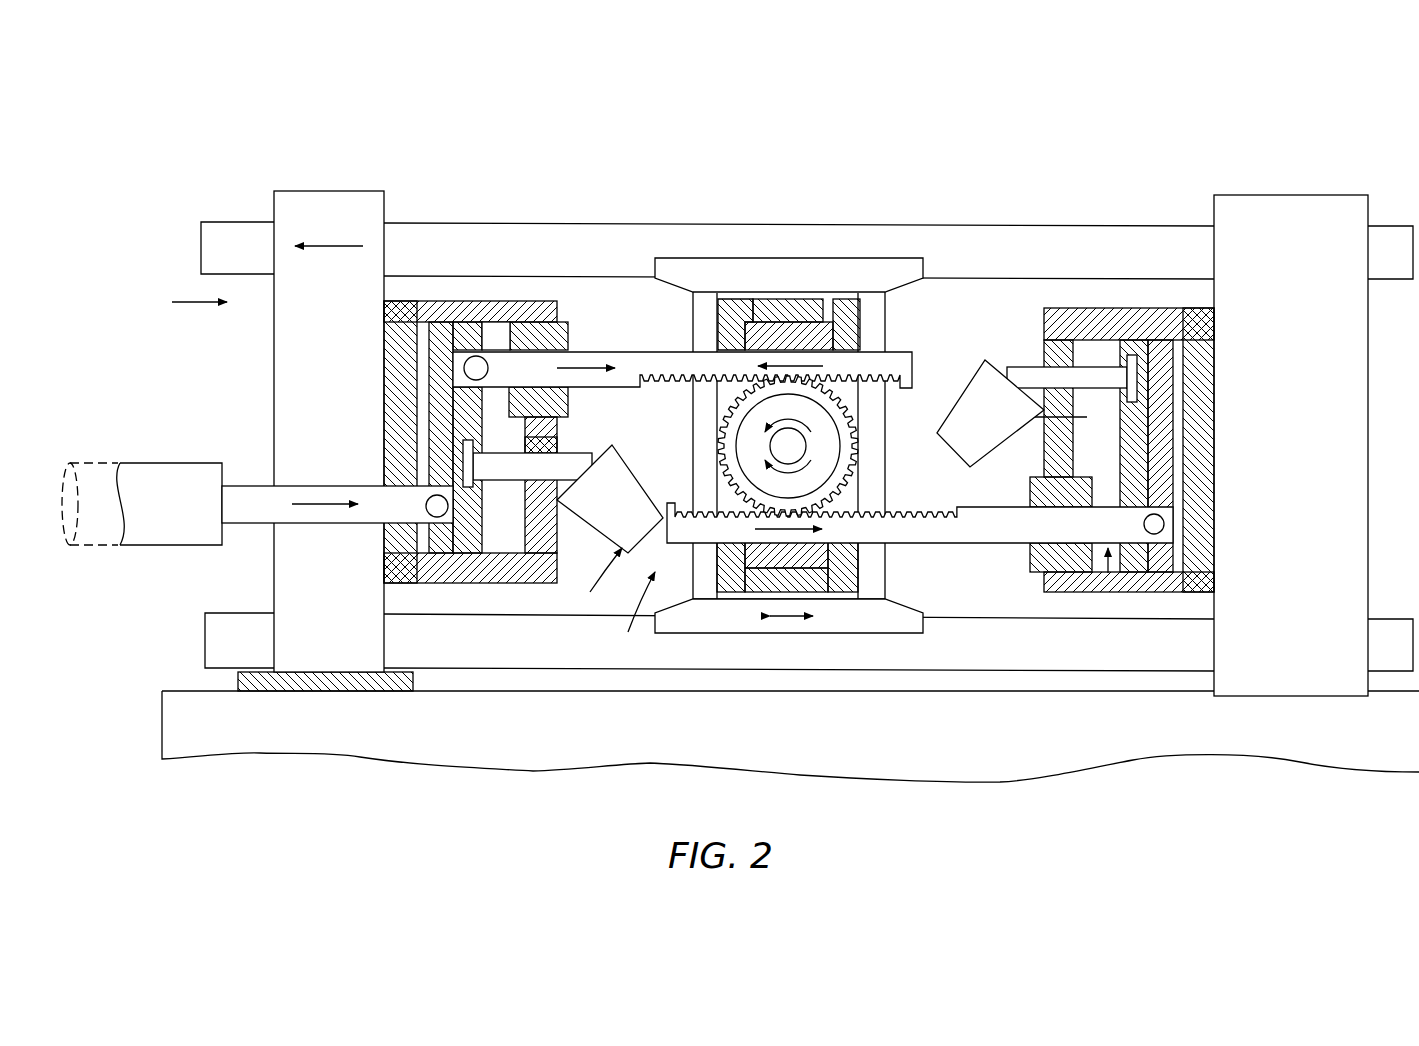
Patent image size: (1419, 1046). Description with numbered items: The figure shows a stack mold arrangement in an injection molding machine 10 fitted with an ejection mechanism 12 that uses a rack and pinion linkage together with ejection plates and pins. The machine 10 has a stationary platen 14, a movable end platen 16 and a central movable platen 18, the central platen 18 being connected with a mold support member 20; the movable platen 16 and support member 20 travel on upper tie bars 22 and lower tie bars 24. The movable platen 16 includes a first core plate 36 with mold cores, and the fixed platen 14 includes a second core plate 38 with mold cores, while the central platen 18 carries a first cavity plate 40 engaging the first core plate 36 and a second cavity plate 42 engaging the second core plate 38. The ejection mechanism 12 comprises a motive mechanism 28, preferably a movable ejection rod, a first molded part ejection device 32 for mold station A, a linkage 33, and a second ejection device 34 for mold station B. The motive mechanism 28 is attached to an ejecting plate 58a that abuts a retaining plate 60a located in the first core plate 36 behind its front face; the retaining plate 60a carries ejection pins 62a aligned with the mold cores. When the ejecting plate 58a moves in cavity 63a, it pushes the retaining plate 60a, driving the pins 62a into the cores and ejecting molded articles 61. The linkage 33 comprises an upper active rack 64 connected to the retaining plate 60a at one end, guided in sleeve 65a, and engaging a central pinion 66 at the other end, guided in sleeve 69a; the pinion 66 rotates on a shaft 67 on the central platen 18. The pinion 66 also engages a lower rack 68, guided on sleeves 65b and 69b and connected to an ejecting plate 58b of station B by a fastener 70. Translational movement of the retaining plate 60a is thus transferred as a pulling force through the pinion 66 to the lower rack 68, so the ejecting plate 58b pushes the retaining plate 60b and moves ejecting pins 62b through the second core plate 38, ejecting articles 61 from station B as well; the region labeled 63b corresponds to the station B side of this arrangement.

The injection molding machine 10 is at (755, 137).
The ejection mechanism 12 is at (588, 580).
The stationary platen 14 is at (1268, 208).
The movable platen 16 is at (305, 200).
The central movable platen 18 is at (768, 304).
The mold support member 20 is at (872, 577).
The upper tie bars 22 is at (228, 232).
The lower tie bars 24 is at (220, 640).
The motive mechanism 28 is at (173, 462).
The first molded part ejection device 32 is at (490, 303).
The linkage 33 is at (630, 613).
The second ejection device 34 is at (1106, 592).
The first core plate 36 is at (545, 330).
The second core plate 38 is at (1047, 316).
The first cavity plate 40 is at (730, 326).
The second cavity plate 42 is at (845, 311).
The ejecting plate 58a is at (438, 547).
The ejecting plate 58b is at (1155, 345).
The retaining plate 60a is at (475, 550).
The retaining plate 60b is at (1130, 342).
The molded articles 61 is at (615, 458).
The ejection pins 62a is at (500, 460).
The ejecting pins 62b is at (1020, 375).
The cavity 63a is at (497, 333).
The second chamber 63b is at (1080, 450).
The upper active rack 64 is at (673, 378).
The sleeve 65a is at (540, 388).
The sleeve 65b is at (1032, 562).
The central pinion 66 is at (832, 394).
The shaft 67 is at (780, 448).
The lower rack 68 is at (900, 512).
The sleeve 69a is at (793, 330).
The sleeve 69b is at (790, 580).
The fastener 70 is at (1165, 520).